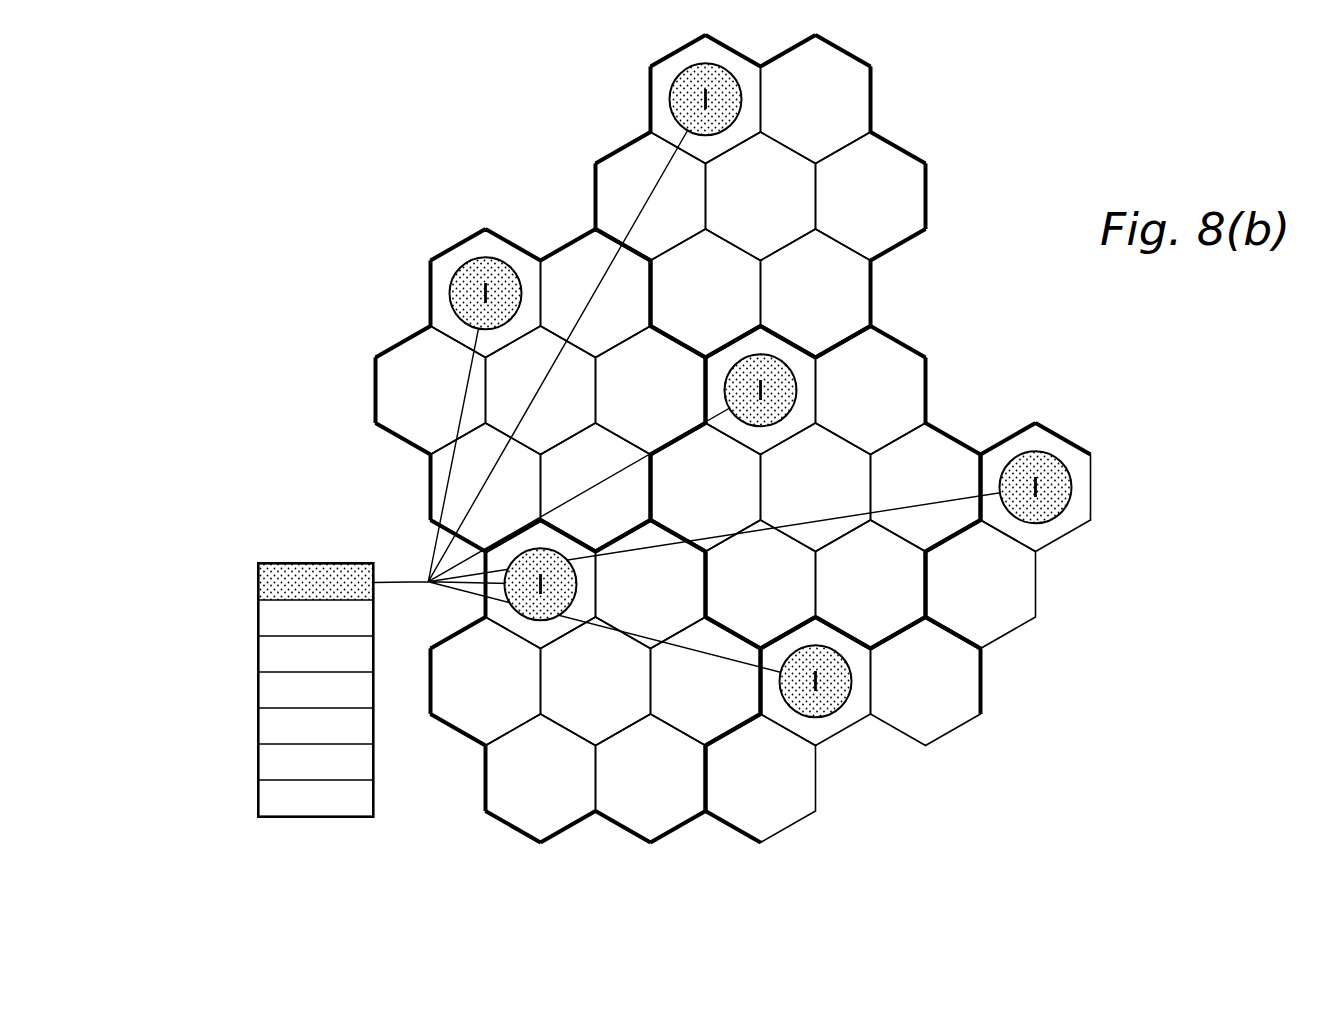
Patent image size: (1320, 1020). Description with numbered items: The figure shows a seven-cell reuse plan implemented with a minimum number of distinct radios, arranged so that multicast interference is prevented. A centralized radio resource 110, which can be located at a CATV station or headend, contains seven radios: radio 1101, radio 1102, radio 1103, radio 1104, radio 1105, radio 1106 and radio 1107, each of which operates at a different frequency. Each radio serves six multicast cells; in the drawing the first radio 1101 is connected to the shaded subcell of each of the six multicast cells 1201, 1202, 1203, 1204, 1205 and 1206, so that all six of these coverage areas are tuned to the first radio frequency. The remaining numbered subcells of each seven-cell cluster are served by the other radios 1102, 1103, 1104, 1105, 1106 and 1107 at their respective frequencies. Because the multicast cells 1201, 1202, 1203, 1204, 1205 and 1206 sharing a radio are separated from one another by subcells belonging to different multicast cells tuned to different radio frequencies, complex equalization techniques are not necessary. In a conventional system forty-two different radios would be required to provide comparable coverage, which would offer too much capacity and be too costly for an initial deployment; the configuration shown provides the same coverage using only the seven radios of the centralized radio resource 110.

The centralized radio resource 110 is at (301, 722).
The radio 1101 is at (258, 580).
The radio 1102 is at (258, 616).
The radio 1103 is at (258, 652).
The radio 1104 is at (258, 688).
The radio 1105 is at (258, 724).
The radio 1106 is at (258, 760).
The radio 1107 is at (283, 801).
The multicast cell 1201 is at (460, 241).
The multicast cell 1202 is at (681, 48).
The multicast cell 1203 is at (905, 346).
The coverage area 1204 is at (1063, 439).
The multicast cell 1205 is at (982, 681).
The multicast cell 1206 is at (675, 829).